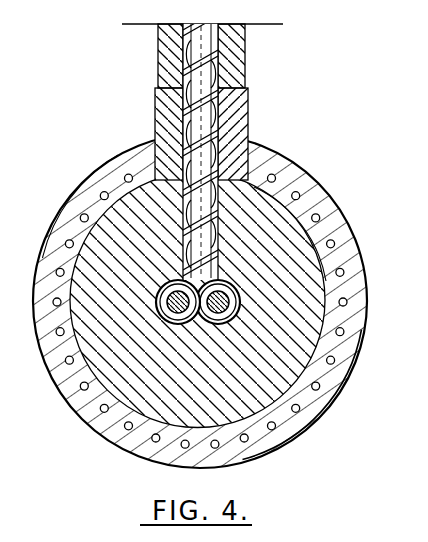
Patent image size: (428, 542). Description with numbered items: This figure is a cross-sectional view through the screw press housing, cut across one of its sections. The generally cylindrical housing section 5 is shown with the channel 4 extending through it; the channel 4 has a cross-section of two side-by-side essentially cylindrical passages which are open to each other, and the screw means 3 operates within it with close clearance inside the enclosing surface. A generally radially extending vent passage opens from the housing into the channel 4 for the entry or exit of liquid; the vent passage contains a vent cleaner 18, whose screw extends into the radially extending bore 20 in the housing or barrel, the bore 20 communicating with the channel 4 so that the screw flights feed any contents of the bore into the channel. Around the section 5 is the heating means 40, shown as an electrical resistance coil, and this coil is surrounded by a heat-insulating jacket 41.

The vent cleaner 18 is at (281, 105).
The heat-insulating jacket 41 is at (303, 173).
The heating means 40 is at (320, 216).
The radially extending bore 20 is at (219, 221).
The channel 4 is at (239, 307).
The screw means 3 is at (214, 322).
The section 5 is at (99, 443).